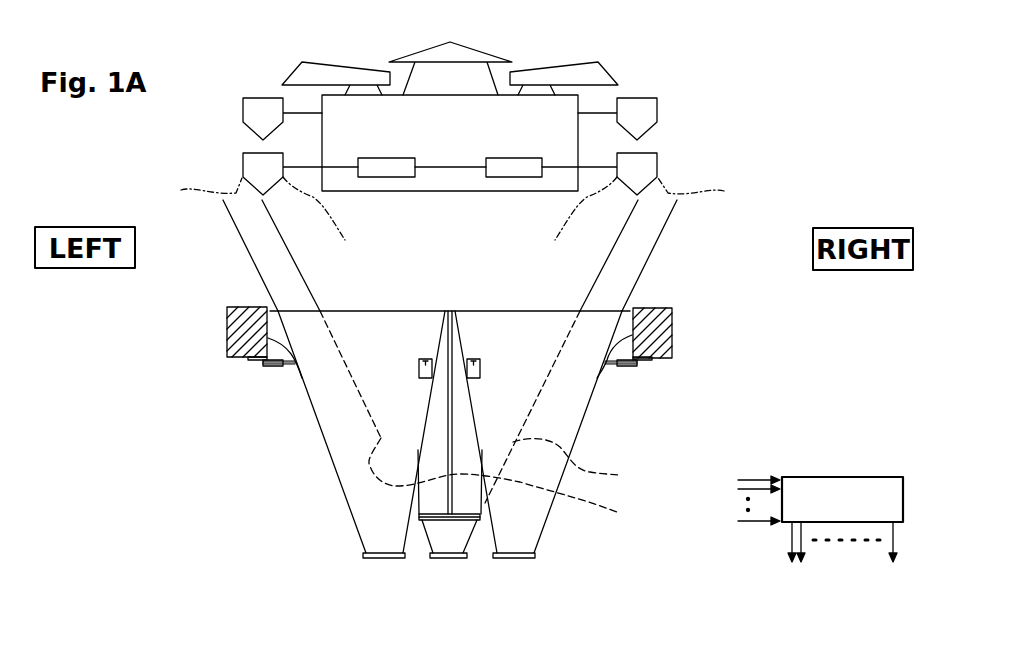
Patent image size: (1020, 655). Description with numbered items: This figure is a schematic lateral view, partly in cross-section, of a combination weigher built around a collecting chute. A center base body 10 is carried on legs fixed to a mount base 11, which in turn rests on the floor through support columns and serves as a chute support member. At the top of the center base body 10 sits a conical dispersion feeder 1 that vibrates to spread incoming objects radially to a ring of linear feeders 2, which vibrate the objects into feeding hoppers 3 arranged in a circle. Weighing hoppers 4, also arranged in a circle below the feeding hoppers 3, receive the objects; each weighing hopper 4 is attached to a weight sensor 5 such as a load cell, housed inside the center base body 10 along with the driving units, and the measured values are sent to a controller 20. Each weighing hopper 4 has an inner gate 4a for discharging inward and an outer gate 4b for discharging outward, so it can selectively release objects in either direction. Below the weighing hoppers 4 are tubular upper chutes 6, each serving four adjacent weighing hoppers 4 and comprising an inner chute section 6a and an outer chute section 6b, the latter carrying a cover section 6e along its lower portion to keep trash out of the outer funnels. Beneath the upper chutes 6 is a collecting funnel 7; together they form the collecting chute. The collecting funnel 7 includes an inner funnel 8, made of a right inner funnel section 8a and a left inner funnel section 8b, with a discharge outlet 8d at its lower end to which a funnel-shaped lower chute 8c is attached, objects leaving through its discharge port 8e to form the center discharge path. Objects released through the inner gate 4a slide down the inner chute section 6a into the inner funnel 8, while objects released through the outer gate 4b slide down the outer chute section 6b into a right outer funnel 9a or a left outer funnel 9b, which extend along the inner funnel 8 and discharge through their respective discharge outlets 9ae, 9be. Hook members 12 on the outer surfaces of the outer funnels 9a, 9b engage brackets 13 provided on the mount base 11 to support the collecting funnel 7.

The dispersion feeder 1 is at (418, 52).
The linear feeders 2 is at (338, 71).
The feeding hoppers 3 is at (243, 112).
The weighing hoppers 4 is at (243, 168).
The inner gate 4a is at (450, 216).
The outer gate 4b is at (455, 192).
The weight sensor 5 is at (389, 157).
The upper chutes 6 is at (469, 347).
The inner chute section 6a is at (288, 253).
The outer chute section 6b is at (258, 276).
The cover section 6e is at (276, 314).
The collecting funnel 7 is at (485, 470).
The inner funnel 8 is at (534, 470).
The right inner funnel section 8a is at (585, 464).
The left inner funnel section 8b is at (513, 481).
The lower chute 8c is at (465, 543).
The discharge outlet 8d is at (425, 521).
The discharge port 8e is at (448, 558).
The right outer funnel 9a is at (578, 432).
The left outer funnel 9b is at (333, 457).
The discharge outlet 9ae is at (514, 558).
The discharge outlet 9be is at (384, 558).
The center base body 10 is at (450, 192).
The mount base 11 is at (227, 333).
The hook members 12 is at (268, 338).
The brackets 13 is at (265, 367).
The controller 20 is at (843, 477).